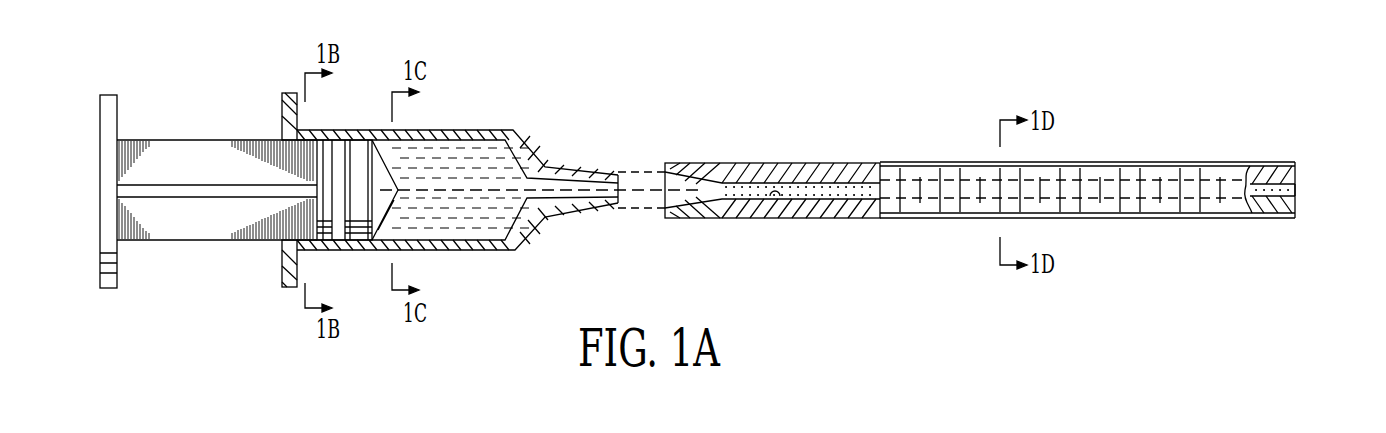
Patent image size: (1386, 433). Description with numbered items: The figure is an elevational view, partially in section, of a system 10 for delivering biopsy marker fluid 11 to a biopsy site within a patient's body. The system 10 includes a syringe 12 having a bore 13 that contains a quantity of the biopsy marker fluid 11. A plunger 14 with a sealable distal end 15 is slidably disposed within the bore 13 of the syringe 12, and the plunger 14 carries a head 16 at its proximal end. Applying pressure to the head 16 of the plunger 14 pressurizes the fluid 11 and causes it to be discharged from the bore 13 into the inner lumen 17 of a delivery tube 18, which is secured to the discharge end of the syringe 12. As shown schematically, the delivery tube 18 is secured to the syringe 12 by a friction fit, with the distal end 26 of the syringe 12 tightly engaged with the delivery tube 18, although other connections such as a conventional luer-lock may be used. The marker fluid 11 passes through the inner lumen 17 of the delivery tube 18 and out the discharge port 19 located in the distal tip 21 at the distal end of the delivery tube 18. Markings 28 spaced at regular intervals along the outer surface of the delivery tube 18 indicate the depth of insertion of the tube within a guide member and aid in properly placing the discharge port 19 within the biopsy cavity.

The system 10 is at (682, 90).
The biopsy marker fluid 11 is at (475, 231).
The syringe 12 is at (503, 131).
The bore 13 is at (452, 148).
The plunger 14 is at (237, 243).
The sealable distal end 15 is at (400, 203).
The head 16 is at (117, 115).
The inner lumen 17 is at (772, 198).
The delivery tube 18 is at (797, 170).
The discharge port 19 is at (1295, 190).
The distal tip 21 is at (1285, 168).
The distal end 26 is at (565, 170).
The markings 28 is at (903, 170).